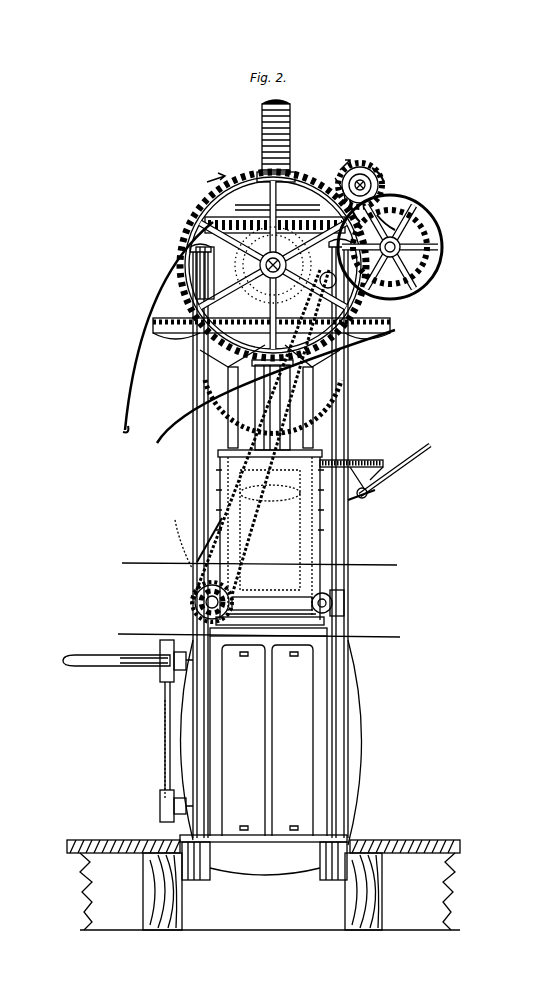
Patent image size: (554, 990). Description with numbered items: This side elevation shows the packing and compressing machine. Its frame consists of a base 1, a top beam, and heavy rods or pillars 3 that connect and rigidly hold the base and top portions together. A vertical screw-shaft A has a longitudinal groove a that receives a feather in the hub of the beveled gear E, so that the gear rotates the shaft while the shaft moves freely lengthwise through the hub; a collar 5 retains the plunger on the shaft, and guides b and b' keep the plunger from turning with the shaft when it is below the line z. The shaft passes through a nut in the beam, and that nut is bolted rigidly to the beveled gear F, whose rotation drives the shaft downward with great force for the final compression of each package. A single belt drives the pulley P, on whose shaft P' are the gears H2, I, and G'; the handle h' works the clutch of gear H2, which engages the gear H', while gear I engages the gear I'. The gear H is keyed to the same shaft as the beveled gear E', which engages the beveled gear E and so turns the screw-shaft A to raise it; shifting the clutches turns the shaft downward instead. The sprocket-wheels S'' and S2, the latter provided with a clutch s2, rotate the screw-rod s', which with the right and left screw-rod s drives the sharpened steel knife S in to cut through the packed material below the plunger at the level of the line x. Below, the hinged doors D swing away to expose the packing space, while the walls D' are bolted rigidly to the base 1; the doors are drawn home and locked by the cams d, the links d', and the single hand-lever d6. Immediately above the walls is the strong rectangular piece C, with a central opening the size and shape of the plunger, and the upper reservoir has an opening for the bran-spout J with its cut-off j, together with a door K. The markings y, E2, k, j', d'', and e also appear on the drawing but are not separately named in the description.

The axis line y is at (278, 42).
The screw-shaft A is at (288, 150).
The beveled gear F is at (271, 329).
The rods or pillars 3 is at (200, 541).
The collar 5 is at (340, 538).
The beveled gear E is at (275, 210).
The beveled gear E' is at (273, 265).
The wheel hub E2 is at (273, 265).
The gear H' is at (360, 177).
The gear H is at (325, 182).
The sprocket-wheel S2 is at (376, 170).
The gear I' is at (374, 198).
The gear I is at (394, 247).
The gear G' is at (403, 247).
The gear H2 is at (398, 212).
The pulley P is at (406, 215).
The pulley shaft P' is at (345, 268).
The clutch s2 is at (168, 327).
The clutch handle h' is at (276, 386).
The guide b' is at (237, 407).
The guide b is at (311, 407).
The longitudinal groove a is at (299, 405).
The door K is at (270, 537).
The link k is at (198, 537).
The bran-spout J is at (351, 475).
The lever j' is at (395, 470).
The cut-off j is at (361, 503).
The section line x x is at (257, 565).
The sprocket-wheel S'' is at (200, 602).
The screw-rod s is at (321, 598).
The knife plate S is at (272, 601).
The screw-rod s' is at (272, 614).
The section line z z is at (256, 636).
The rectangular piece C is at (330, 636).
The hinged walls D is at (265, 736).
The fixed walls D' is at (271, 742).
The hand-lever d6 is at (116, 653).
The links d' is at (157, 733).
The cams d is at (164, 733).
The rod d'' is at (158, 735).
The rod e is at (160, 750).
The base 1 is at (263, 857).